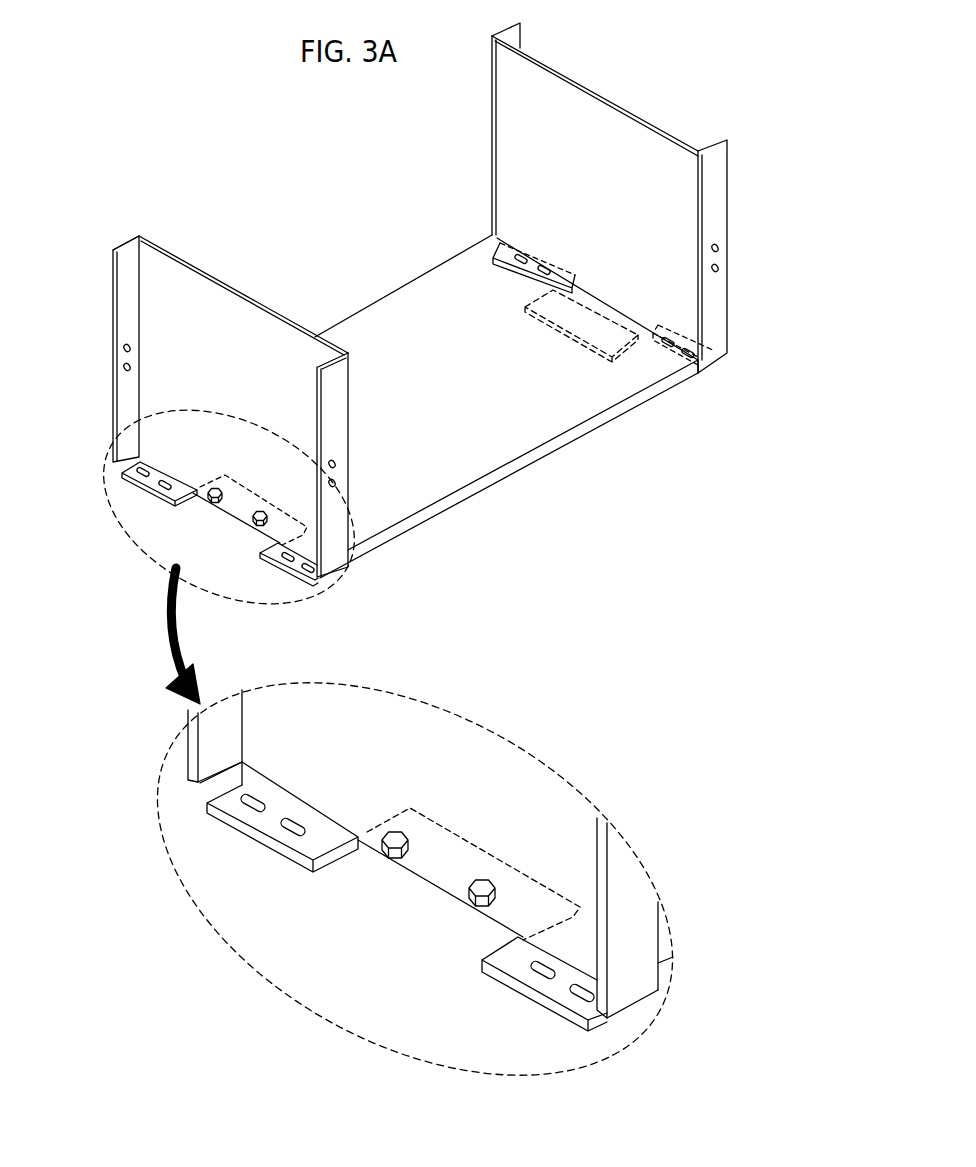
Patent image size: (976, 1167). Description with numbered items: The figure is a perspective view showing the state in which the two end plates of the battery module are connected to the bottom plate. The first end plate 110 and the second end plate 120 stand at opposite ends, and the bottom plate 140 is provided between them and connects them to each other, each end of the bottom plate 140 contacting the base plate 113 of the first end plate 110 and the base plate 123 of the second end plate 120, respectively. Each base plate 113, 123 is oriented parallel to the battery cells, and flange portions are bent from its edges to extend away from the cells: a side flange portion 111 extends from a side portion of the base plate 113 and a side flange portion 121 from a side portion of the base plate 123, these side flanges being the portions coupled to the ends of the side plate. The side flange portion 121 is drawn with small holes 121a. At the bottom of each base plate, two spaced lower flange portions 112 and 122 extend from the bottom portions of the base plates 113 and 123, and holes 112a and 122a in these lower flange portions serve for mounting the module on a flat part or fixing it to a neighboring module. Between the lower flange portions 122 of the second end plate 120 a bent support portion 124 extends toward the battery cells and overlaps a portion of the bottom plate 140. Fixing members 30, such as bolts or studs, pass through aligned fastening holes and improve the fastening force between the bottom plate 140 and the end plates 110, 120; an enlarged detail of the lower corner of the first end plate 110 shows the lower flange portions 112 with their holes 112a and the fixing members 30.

The fixing member 30 is at (253, 517).
The first end plate 110 is at (150, 400).
The side flange portion 111 is at (123, 435).
The lower flange portion 112 is at (290, 577).
The hole 112a is at (153, 488).
The base plate 113 is at (160, 453).
The second end plate 120 is at (611, 213).
The side flange portion 121 is at (515, 40).
The fastening hole 121a is at (717, 248).
The lower flange portion 122 is at (503, 262).
The hole 122a is at (521, 255).
The base plate 123 is at (627, 140).
The bent support portion 124 is at (620, 337).
The bottom plate 140 is at (535, 488).